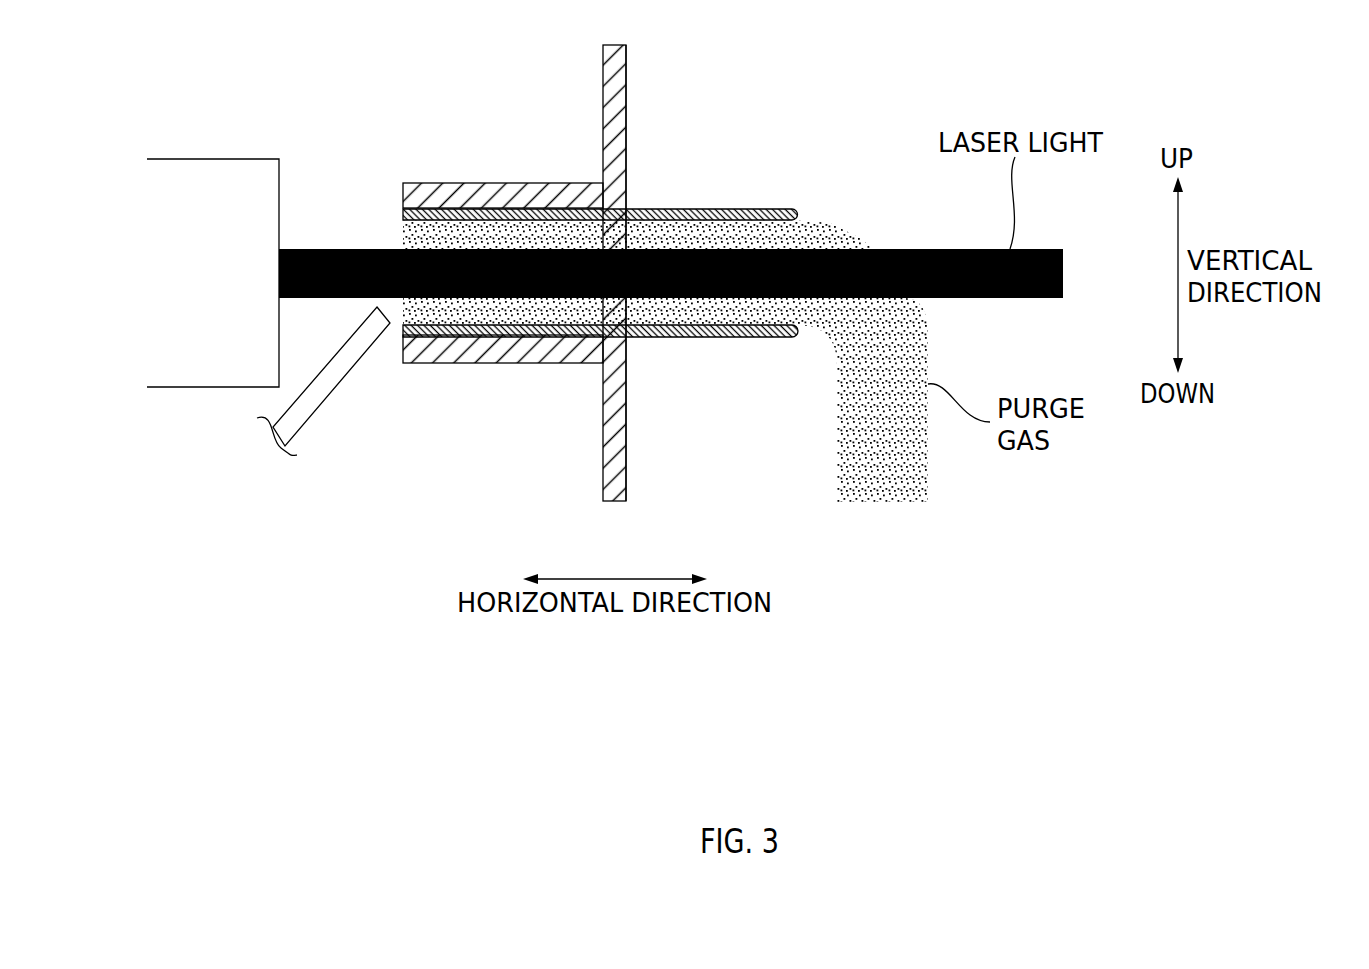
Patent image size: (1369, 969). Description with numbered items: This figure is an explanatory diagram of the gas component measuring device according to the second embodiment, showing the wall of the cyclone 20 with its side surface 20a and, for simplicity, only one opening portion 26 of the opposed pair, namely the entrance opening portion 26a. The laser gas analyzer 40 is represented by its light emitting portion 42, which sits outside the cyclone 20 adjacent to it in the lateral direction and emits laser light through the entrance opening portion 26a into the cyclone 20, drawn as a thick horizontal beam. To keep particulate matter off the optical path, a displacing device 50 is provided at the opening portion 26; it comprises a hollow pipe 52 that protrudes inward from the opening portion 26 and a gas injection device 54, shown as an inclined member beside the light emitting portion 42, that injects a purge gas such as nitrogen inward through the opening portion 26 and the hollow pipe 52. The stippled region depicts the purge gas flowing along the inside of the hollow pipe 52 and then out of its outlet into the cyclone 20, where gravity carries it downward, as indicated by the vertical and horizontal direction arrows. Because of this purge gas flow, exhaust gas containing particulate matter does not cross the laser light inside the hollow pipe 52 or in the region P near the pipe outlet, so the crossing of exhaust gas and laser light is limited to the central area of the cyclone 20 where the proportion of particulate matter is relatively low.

The laser gas analyzer 40 is at (227, 221).
The light emitting portion 42 is at (246, 130).
The cyclone 20 is at (588, 87).
The side surface 20a is at (627, 60).
The displacing device 50 is at (528, 327).
The hollow pipe 52 is at (748, 209).
The gas injection device 54 is at (313, 412).
The opening portion 26 is at (665, 361).
The entrance opening portion 26a is at (632, 316).
The region near the outlet opening of the hollow pipe P is at (842, 212).